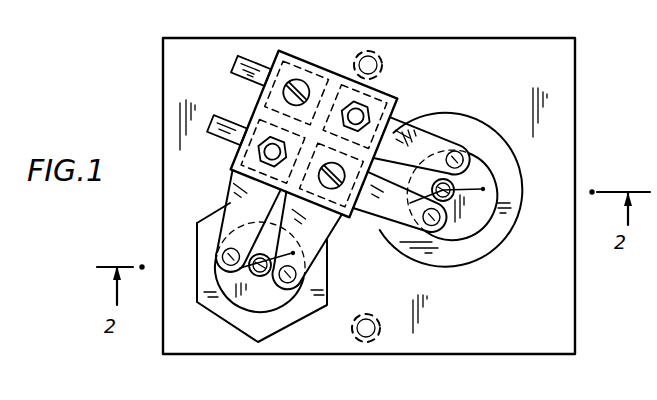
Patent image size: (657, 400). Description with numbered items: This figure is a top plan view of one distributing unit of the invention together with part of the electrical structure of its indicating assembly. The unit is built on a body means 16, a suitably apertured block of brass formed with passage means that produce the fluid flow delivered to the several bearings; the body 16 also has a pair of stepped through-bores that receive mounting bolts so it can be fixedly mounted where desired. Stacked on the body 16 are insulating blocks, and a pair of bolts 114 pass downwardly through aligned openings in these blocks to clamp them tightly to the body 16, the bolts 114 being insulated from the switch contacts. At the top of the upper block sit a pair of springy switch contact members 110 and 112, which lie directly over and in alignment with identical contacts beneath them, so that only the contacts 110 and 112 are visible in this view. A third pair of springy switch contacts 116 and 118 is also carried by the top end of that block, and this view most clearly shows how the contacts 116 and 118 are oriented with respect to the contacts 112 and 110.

The body means 16 is at (534, 307).
The springy switch contact member 110 is at (407, 123).
The springy switch contact member 112 is at (391, 247).
The bolts 114 is at (299, 82).
The springy switch contact 116 is at (326, 252).
The springy switch contact 118 is at (197, 224).